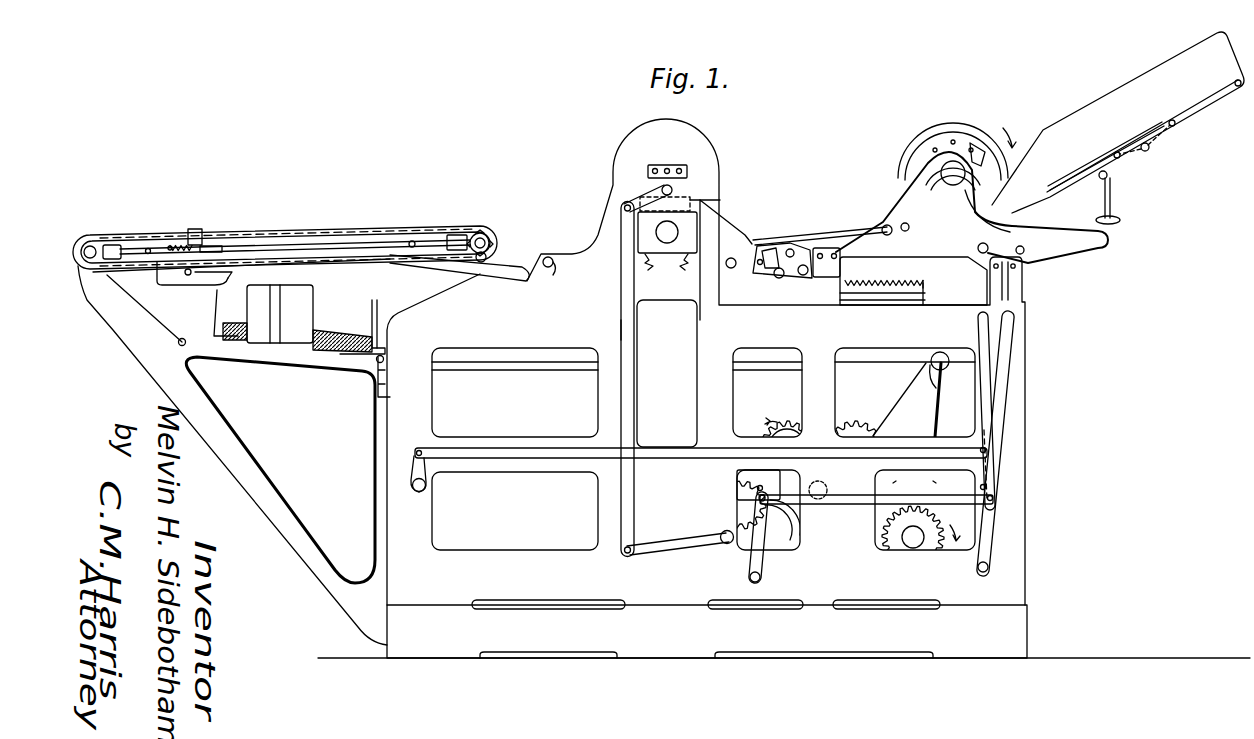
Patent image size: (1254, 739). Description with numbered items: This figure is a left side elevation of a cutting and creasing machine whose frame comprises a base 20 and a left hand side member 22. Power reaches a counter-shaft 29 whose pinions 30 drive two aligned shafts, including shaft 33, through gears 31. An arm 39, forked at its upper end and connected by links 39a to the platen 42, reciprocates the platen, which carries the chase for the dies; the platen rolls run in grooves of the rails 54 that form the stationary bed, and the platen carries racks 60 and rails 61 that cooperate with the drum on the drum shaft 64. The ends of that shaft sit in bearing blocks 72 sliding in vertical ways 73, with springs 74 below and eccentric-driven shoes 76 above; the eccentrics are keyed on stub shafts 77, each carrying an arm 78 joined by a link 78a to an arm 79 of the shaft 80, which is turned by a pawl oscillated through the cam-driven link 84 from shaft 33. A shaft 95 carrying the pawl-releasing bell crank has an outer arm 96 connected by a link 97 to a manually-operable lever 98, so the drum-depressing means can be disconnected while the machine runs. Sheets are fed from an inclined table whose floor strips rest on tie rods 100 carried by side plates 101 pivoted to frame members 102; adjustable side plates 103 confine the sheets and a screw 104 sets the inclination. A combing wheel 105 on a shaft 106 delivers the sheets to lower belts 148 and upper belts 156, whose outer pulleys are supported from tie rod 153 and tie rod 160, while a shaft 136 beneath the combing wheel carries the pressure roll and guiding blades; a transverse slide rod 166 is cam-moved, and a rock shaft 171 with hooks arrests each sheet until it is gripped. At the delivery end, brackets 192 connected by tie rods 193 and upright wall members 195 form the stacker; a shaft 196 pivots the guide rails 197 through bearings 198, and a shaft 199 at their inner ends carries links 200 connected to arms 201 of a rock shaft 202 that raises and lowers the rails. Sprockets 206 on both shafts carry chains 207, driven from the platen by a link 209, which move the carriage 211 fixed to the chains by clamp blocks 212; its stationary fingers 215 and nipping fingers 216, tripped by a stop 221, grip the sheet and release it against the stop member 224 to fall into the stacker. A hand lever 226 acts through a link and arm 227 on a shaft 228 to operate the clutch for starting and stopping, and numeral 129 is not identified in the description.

The base 20 is at (676, 660).
The left hand side member 22 is at (1025, 523).
The counter-shaft 29 is at (913, 548).
The pinions 30 is at (934, 551).
The gears 31 is at (857, 428).
The shaft 33 is at (826, 486).
The arm 39 is at (913, 388).
The links 39a is at (950, 394).
The platen 42 is at (928, 296).
The rails 54 is at (551, 362).
The racks 60 is at (924, 283).
The rails 61 is at (890, 281).
The drum shaft 64 is at (667, 244).
The bearing blocks 72 is at (697, 250).
The vertical ways 73 is at (702, 205).
The springs 74 is at (661, 268).
The shoes 76 is at (692, 197).
The stub shafts 77 is at (672, 188).
The arm 78 is at (628, 200).
The link 78a is at (621, 325).
The arm 79 is at (684, 549).
The shaft 80 is at (727, 545).
The link 84 is at (745, 487).
The shaft 95 is at (762, 582).
The arm 96 is at (768, 564).
The link 97 is at (846, 504).
The manually-operable lever 98 is at (1012, 345).
The tie rods 100 is at (1112, 157).
The side plates 101 is at (1126, 161).
The frame members 102 is at (960, 214).
The side plates 103 is at (1120, 96).
The screw 104 is at (1121, 220).
The combing wheel 105 is at (966, 134).
The shaft 106 is at (950, 180).
The pin 129 is at (1024, 250).
The shaft 136 is at (978, 248).
The belts 148 is at (757, 247).
The tie rod 153 is at (779, 279).
The belts 156 is at (861, 228).
The tie rod 160 is at (792, 249).
The transverse slide rod 166 is at (804, 276).
The rock shaft 171 is at (732, 269).
The brackets 192 is at (274, 524).
The tie rods 193 is at (179, 345).
The upright wall members 195 is at (374, 305).
The shaft 196 is at (92, 262).
The guide rails 197 is at (290, 248).
The bearings 198 is at (120, 250).
The shaft 199 is at (484, 243).
The links 200 is at (487, 255).
The arms 201 is at (551, 253).
The rock shaft 202 is at (553, 268).
The sprockets 206 is at (93, 246).
The chains 207 is at (363, 235).
The link 209 is at (474, 282).
The carriage 211 is at (197, 240).
The clamp blocks 212 is at (197, 230).
The stationary fingers 215 is at (234, 273).
The nipping fingers 216 is at (215, 303).
The stop 221 is at (416, 243).
The stop member 224 is at (200, 286).
The hand lever 226 is at (988, 407).
The link and arm 227 is at (485, 458).
The shaft 228 is at (426, 492).